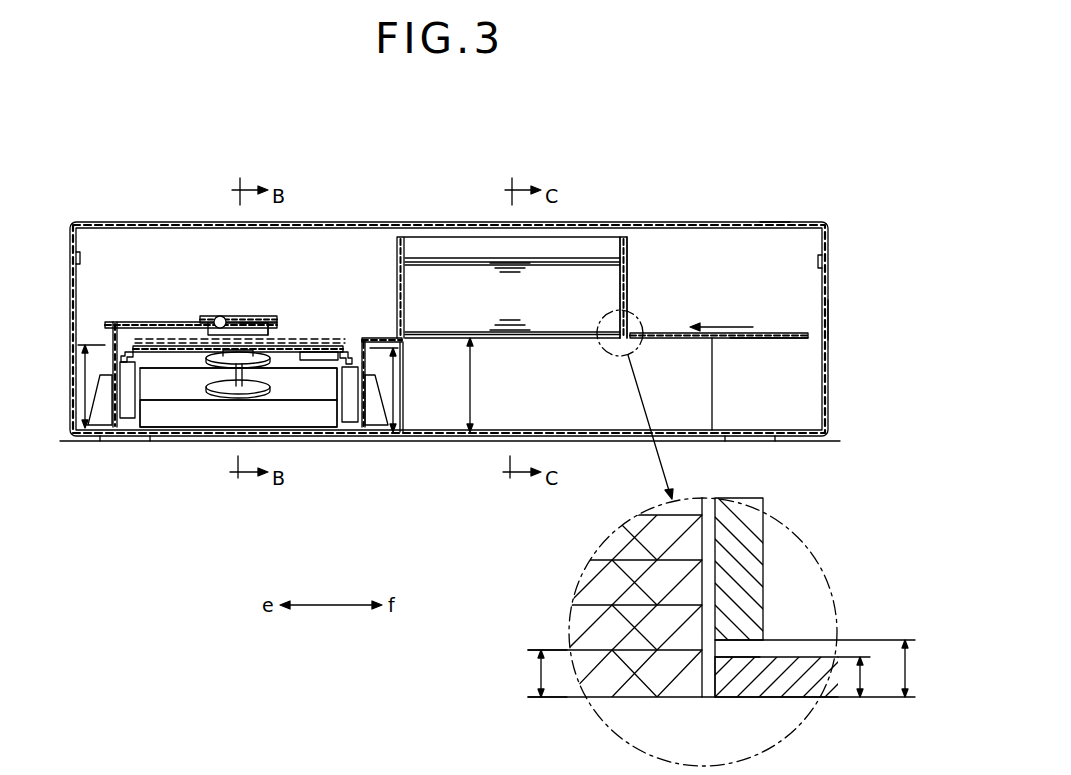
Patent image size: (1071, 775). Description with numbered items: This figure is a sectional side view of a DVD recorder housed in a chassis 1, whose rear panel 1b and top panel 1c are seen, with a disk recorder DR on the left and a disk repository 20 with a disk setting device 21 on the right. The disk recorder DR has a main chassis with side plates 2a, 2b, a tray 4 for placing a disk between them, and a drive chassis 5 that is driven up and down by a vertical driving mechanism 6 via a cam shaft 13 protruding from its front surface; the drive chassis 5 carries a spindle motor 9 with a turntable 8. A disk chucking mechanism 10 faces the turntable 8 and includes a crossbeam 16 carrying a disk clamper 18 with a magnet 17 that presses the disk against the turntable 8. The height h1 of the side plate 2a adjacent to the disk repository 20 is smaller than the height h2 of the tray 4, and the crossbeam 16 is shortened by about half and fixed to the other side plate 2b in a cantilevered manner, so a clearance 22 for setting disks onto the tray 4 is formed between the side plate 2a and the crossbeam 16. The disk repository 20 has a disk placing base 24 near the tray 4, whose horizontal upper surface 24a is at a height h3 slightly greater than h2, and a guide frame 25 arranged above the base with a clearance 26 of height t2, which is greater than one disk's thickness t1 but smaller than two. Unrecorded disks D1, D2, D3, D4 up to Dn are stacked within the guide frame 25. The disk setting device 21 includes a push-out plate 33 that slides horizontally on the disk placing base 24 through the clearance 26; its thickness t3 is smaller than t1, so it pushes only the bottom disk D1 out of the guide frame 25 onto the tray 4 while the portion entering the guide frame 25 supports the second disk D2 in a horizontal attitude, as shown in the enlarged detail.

The chassis 1 is at (695, 221).
The rear panel 1b is at (828, 318).
The top panel 1c is at (772, 222).
The side plate 2a is at (352, 380).
The side plate 2b is at (125, 380).
The tray 4 is at (298, 346).
The drive chassis 5 is at (312, 426).
The vertical driving mechanism 6 is at (238, 396).
The turntable 8 is at (214, 366).
The spindle motor 9 is at (270, 391).
The disk chucking mechanism 10 is at (266, 308).
The cam shaft 13 is at (230, 417).
The crossbeam 16 is at (157, 322).
The magnet 17 is at (218, 317).
The disk clamper 18 is at (252, 318).
The disk repository 20 is at (397, 240).
The disk setting device 21 is at (781, 333).
The clearance 22 is at (316, 331).
The disk placing base 24 is at (713, 407).
The upper surface 24a is at (383, 337).
The guide frame 25 is at (628, 268).
The clearance 26 is at (748, 650).
The push-out plate 33 is at (750, 341).
The disk D1 is at (562, 341).
The disk D2 is at (572, 622).
The disk D3 is at (580, 585).
The disk D4 is at (602, 544).
The disk Dn is at (600, 257).
The disk recorder DR is at (221, 302).
The height of side plate 2a h1 is at (403, 390).
The height of tray h2 is at (79, 392).
The height of upper surface 24a h3 is at (477, 390).
The disk thickness t1 is at (541, 673).
The clearance thickness t2 is at (847, 668).
The push-out plate thickness t3 is at (863, 677).